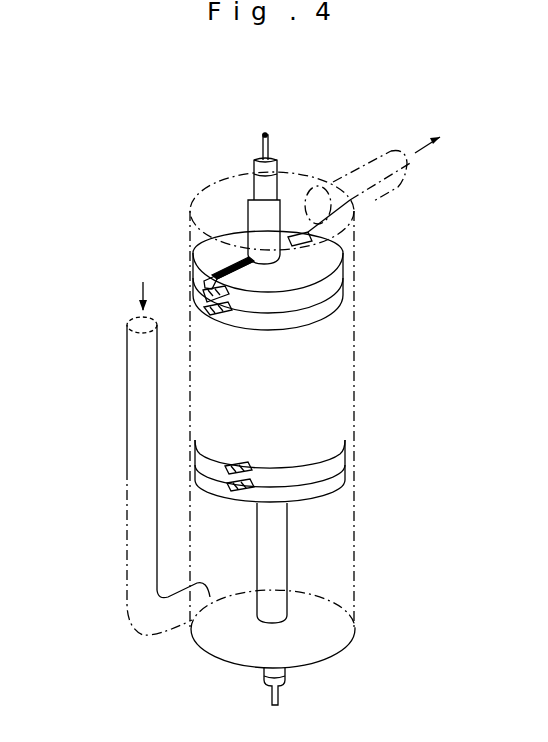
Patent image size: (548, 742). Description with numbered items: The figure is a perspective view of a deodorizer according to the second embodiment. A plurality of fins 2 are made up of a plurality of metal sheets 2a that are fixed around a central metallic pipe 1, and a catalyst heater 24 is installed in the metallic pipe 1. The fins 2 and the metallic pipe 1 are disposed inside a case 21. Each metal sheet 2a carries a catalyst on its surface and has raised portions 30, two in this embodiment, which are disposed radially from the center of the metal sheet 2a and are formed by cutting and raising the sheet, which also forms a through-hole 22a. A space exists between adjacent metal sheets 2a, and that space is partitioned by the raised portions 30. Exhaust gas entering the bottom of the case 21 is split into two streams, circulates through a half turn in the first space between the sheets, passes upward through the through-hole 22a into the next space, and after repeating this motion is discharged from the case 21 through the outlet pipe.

The metallic pipe 1 is at (275, 552).
The fins 2 is at (262, 339).
The metal sheet 2a is at (322, 262).
The case 21 is at (355, 402).
The through-hole 22a is at (205, 275).
The catalyst heater 24 is at (262, 186).
The raised portion 30 is at (226, 270).